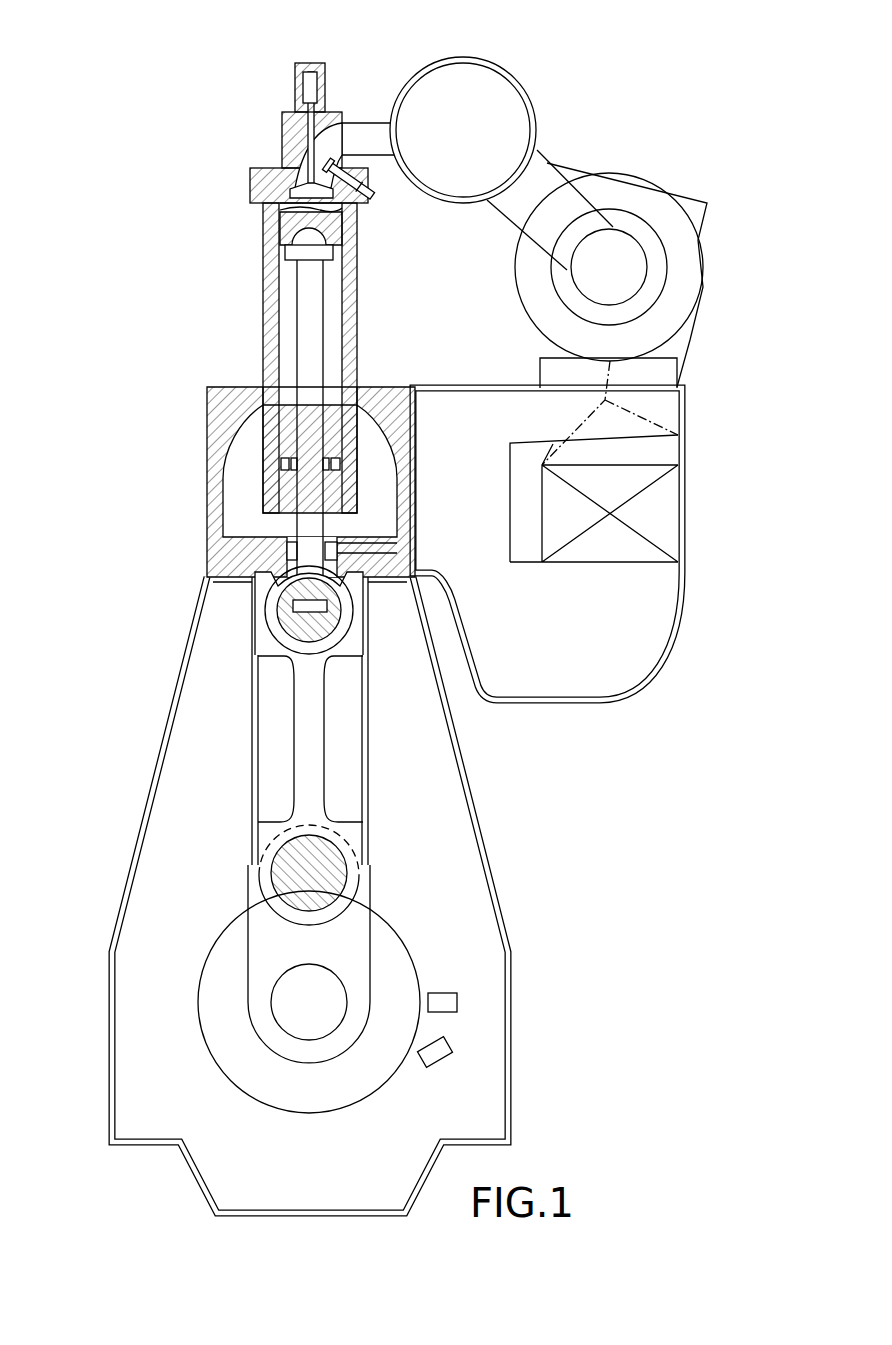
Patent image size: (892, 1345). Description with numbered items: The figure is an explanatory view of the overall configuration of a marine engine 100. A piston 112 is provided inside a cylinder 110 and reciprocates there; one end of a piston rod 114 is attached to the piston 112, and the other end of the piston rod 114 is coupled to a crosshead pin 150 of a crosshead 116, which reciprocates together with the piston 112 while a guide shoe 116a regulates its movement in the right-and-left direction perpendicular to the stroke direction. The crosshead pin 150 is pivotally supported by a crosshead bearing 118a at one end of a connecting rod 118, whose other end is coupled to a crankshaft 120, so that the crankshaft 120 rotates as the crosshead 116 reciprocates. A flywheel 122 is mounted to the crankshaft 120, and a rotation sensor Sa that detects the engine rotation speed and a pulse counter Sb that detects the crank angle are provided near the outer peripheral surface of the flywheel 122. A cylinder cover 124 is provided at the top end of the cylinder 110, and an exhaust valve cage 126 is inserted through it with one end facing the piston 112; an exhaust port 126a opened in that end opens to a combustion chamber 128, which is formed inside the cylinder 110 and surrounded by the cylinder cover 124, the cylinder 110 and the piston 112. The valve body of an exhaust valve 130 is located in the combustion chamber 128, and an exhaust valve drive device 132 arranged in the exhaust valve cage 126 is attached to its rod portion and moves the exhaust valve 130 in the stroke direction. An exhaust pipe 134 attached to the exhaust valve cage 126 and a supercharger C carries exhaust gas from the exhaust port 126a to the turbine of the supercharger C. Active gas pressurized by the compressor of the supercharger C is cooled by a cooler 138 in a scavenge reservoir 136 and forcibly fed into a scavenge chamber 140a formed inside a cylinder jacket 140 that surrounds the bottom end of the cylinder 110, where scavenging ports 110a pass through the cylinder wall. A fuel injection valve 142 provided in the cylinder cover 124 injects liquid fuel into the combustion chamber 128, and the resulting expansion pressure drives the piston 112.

The marine engine 100 is at (131, 58).
The cylinder 110 is at (263, 348).
The scavenging ports 110a is at (340, 470).
The piston 112 is at (285, 270).
The piston rod 114 is at (297, 292).
The crosshead 116 is at (257, 652).
The guide shoe 116a is at (265, 610).
The connecting rod 118 is at (293, 738).
The crosshead bearing 118a is at (312, 623).
The crankshaft 120 is at (248, 992).
The flywheel 122 is at (200, 972).
The cylinder cover 124 is at (252, 190).
The exhaust valve cage 126 is at (282, 143).
The exhaust port 126a is at (356, 166).
The combustion chamber 128 is at (348, 252).
The exhaust valve 130 is at (344, 206).
The exhaust valve drive device 132 is at (298, 80).
The exhaust pipe 134 is at (537, 118).
The scavenge reservoir 136 is at (581, 624).
The cooler 138 is at (683, 510).
The cylinder jacket 140 is at (207, 415).
The scavenge chamber 140a is at (392, 536).
The fuel injection valve 142 is at (367, 162).
The crosshead pin 150 is at (255, 590).
The supercharger C is at (640, 185).
The rotation sensor Sa is at (457, 1003).
The pulse counter Sb is at (455, 1059).